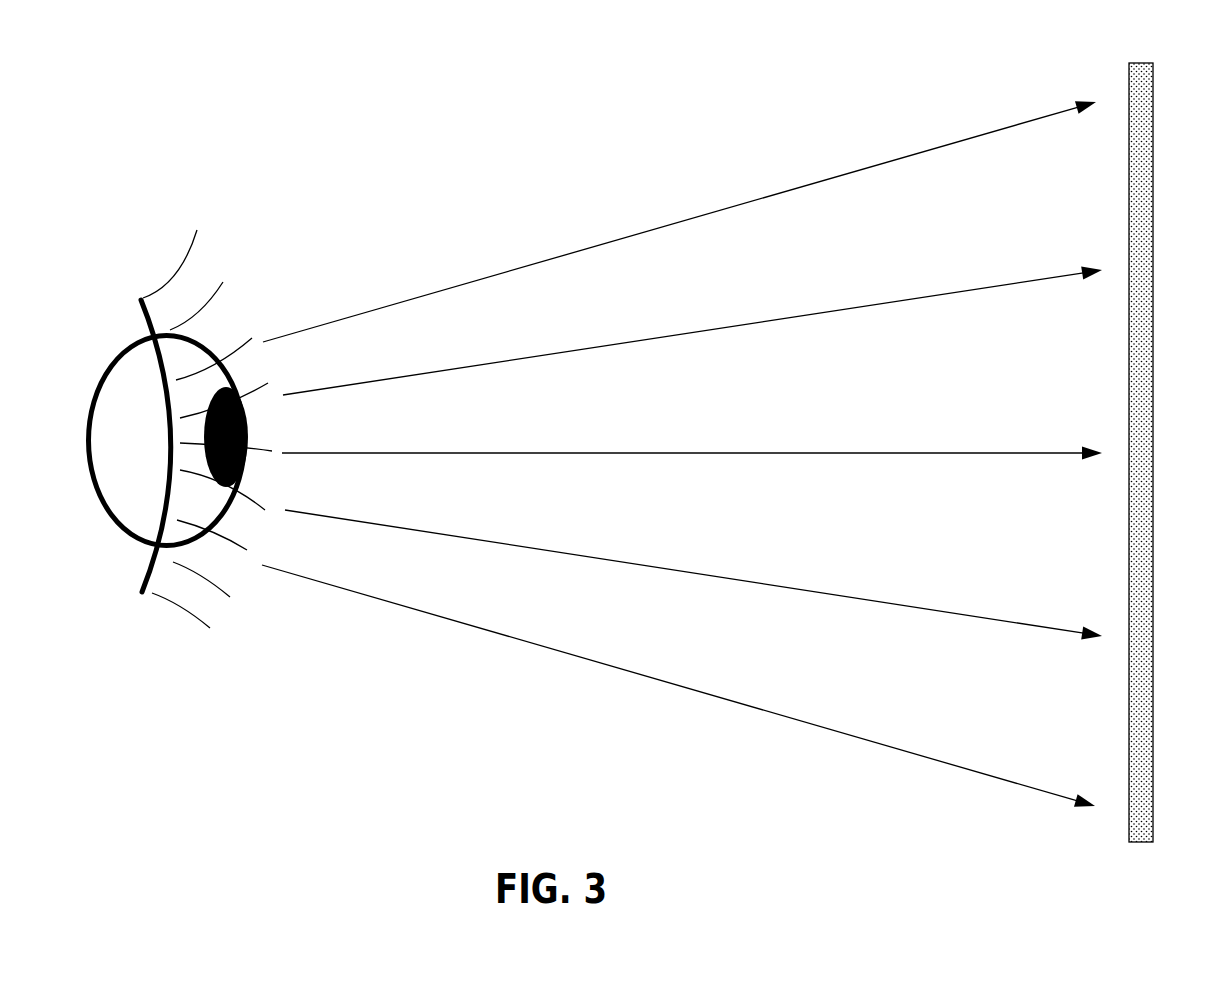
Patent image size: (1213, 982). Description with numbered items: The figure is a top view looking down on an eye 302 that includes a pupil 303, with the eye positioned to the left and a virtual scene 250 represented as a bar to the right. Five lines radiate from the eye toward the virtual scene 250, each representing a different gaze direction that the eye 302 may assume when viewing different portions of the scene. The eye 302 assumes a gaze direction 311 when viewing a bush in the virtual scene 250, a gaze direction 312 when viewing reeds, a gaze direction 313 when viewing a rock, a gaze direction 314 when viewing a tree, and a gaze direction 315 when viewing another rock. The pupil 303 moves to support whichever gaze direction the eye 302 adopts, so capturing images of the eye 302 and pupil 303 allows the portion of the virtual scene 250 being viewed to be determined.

The virtual scene 250 is at (1137, 63).
The eye 302 is at (71, 243).
The pupil 303 is at (273, 427).
The gaze direction 311 is at (679, 208).
The gaze direction 312 is at (692, 317).
The gaze direction 313 is at (692, 435).
The gaze direction 314 is at (694, 574).
The gaze direction 315 is at (678, 686).